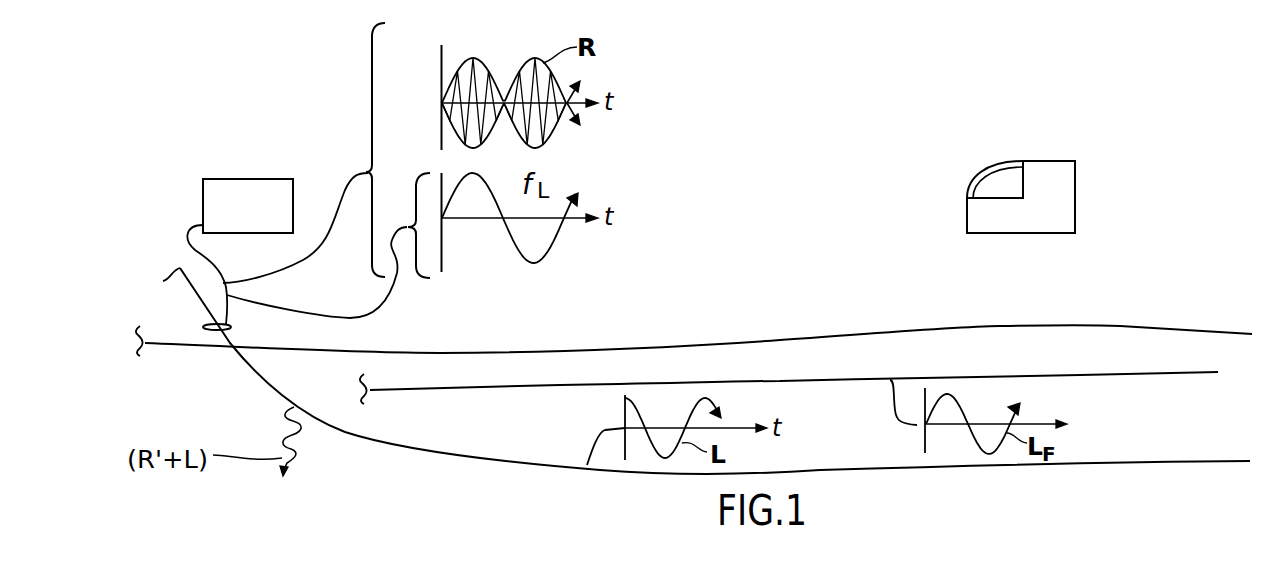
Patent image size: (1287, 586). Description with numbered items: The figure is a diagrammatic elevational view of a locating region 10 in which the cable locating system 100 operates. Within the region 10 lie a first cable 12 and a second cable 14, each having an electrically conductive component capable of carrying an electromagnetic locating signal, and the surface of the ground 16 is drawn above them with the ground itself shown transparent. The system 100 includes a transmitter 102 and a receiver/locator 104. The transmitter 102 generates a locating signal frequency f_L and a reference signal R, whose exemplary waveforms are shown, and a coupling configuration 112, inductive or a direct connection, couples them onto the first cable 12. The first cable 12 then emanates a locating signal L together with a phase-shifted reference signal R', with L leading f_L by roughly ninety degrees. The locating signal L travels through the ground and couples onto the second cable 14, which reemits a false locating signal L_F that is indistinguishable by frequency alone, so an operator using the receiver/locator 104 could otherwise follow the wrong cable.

The locating region 10 is at (910, 104).
The cable locating system 100 is at (1110, 166).
The receiver/locator 104 is at (1062, 212).
The transmitter 102 is at (277, 216).
The coupling configuration 112 is at (203, 327).
The ground surface 16 is at (990, 327).
The second cable 14 is at (812, 380).
The first cable 12 is at (820, 472).